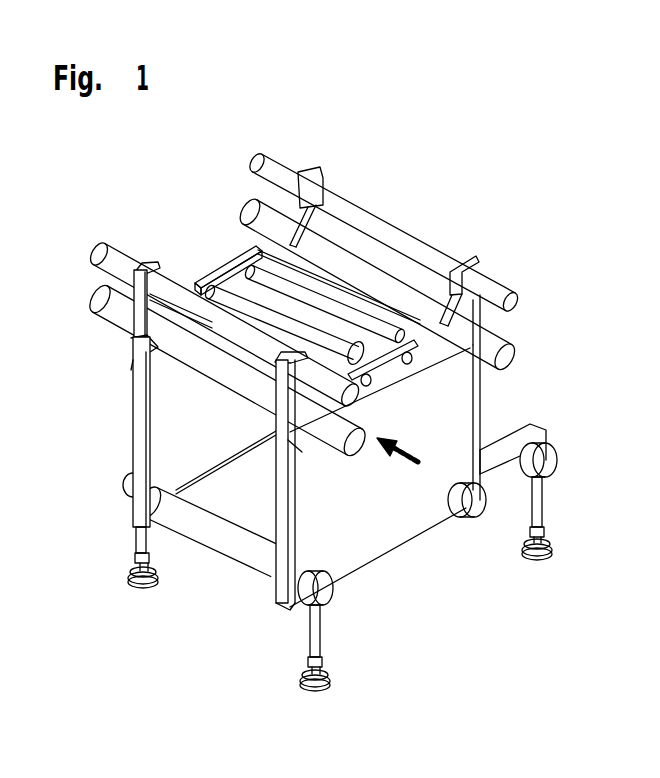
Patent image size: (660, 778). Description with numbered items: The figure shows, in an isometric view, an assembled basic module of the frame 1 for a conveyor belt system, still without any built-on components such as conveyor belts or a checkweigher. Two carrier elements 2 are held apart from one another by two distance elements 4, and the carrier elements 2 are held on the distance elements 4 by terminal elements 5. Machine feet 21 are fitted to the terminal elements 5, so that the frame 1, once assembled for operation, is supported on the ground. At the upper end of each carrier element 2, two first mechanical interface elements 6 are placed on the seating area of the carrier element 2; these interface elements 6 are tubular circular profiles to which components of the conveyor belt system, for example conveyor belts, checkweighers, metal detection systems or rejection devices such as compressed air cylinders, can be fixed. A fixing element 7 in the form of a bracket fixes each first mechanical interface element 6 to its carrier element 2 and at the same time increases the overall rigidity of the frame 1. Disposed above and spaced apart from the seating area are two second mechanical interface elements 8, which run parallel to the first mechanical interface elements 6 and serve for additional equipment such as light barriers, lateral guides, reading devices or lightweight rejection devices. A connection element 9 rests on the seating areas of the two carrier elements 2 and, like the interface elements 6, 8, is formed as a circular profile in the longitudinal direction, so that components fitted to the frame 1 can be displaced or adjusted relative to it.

The frame 1 is at (482, 571).
The carrier element 2 is at (150, 415).
The distance element 4 is at (195, 523).
The terminal element 5 is at (128, 484).
The first mechanical interface element 6 is at (103, 296).
The fixing element 7 is at (316, 173).
The second mechanical interface element 8 is at (123, 258).
The connection element 9 is at (224, 255).
The machine foot 21 is at (130, 564).